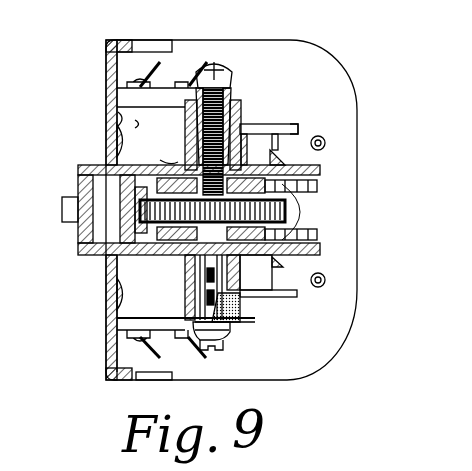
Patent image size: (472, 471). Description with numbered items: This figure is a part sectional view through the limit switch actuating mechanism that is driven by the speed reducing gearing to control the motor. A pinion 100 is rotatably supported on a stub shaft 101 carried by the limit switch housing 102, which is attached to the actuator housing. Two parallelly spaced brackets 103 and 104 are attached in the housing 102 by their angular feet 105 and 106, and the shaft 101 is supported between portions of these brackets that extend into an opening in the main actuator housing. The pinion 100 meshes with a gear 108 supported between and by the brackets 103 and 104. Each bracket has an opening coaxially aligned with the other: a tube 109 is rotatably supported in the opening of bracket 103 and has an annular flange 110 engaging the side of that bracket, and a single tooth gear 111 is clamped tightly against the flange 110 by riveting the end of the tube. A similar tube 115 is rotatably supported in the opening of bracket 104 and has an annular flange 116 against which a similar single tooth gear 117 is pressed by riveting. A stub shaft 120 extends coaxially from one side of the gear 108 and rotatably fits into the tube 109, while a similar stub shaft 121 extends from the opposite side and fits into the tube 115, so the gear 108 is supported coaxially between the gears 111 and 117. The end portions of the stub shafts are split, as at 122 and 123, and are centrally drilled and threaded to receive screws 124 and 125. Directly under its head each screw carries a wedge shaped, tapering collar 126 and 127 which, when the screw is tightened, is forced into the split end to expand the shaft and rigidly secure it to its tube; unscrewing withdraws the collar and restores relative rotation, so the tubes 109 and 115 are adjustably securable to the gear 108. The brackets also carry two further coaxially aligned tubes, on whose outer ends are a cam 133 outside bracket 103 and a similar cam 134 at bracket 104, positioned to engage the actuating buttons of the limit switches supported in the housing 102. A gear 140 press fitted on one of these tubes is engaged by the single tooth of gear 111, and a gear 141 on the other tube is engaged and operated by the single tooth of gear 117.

The pinion 100 is at (62, 212).
The shaft 101 is at (100, 192).
The limit switch housing 102 is at (108, 48).
The bracket 103 is at (320, 170).
The bracket 104 is at (320, 250).
The angular foot 105 is at (118, 136).
The angular foot 106 is at (118, 290).
The gear 108 is at (285, 212).
The tube 109 is at (186, 124).
The annular flange 110 is at (247, 167).
The gear 111 is at (150, 170).
The tube 115 is at (186, 304).
The annular flange 116 is at (248, 257).
The gear 117 is at (170, 245).
The stub shaft 120 is at (180, 168).
The stub shaft 121 is at (210, 246).
The split end portion 122 is at (243, 124).
The split end portion 123 is at (241, 309).
The screw 124 is at (224, 68).
The screw 125 is at (222, 342).
The tapering collar 126 is at (232, 88).
The tapering collar 127 is at (230, 329).
The cam 133 is at (300, 124).
The cam 134 is at (297, 295).
The gear 140 is at (317, 188).
The gear 141 is at (317, 234).